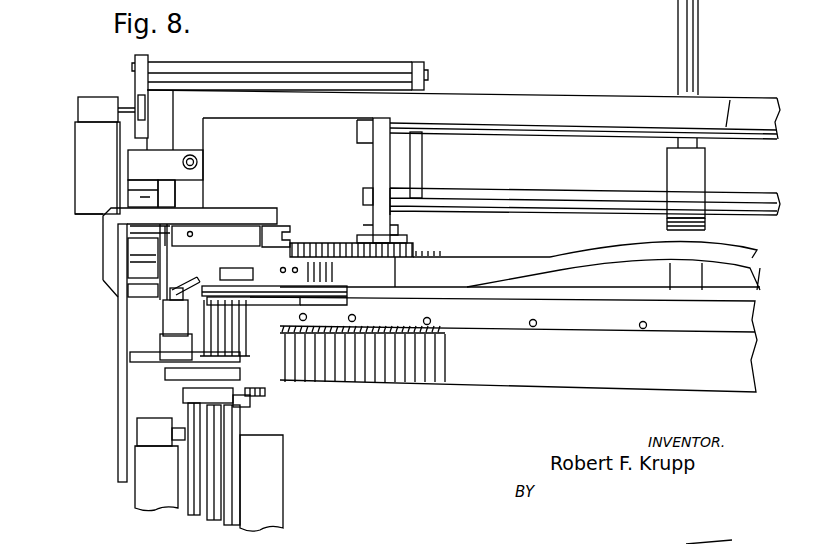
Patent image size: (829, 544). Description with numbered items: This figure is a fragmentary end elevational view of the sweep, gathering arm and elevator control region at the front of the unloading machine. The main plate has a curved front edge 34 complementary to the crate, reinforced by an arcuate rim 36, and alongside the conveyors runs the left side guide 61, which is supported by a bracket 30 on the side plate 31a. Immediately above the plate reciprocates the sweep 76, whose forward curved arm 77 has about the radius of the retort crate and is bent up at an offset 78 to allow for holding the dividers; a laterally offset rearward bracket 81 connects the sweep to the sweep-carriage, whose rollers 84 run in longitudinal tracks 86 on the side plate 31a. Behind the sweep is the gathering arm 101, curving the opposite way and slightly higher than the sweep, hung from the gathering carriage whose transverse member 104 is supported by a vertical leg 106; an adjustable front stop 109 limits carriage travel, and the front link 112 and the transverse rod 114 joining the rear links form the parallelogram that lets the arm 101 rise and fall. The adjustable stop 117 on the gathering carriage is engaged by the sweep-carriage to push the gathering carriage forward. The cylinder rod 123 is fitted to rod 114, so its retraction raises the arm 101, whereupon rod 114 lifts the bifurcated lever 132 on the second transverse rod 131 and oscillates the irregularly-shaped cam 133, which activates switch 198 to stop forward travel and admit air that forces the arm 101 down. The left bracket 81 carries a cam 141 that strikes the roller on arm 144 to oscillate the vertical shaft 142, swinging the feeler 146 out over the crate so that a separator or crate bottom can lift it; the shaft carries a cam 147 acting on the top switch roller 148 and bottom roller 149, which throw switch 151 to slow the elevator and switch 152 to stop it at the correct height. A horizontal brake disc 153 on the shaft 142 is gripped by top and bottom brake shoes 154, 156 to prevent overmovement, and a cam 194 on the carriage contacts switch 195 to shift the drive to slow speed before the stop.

The bracket 30 is at (240, 210).
The side plate 31a is at (125, 340).
The front edge 34 is at (587, 323).
The arcuate rim 36 is at (528, 258).
The left side guide 61 is at (277, 237).
The sweep yoke 76 is at (456, 287).
The curved arm 77 is at (480, 272).
The offset 78 is at (732, 253).
The bracket 81 is at (197, 277).
The rollers 84 is at (140, 261).
The longitudinal tracks 86 is at (133, 294).
The gathering arm 101 is at (442, 245).
The transverse member 104 is at (312, 110).
The vertical leg 106 is at (200, 190).
The front stop 109 is at (203, 165).
The front link 112 is at (377, 170).
The transverse rod 114 is at (490, 192).
The adjustable stop 117 is at (197, 234).
The rod 123 is at (695, 40).
The second transverse rod 131 is at (308, 72).
The bifurcated lever 132 is at (420, 167).
The cam 133 is at (135, 92).
The cam 141 is at (272, 265).
The vertical shaft 142 is at (238, 425).
The arm 144 is at (250, 302).
The feeler 146 is at (348, 288).
The cam 147 is at (250, 398).
The top switch roller 148 is at (184, 414).
The bottom roller 149 is at (173, 438).
The switch 151 is at (270, 485).
The switch 152 is at (140, 440).
The brake disc 153 is at (265, 390).
The top brake shoe 154 is at (140, 360).
The bottom brake shoe 156 is at (180, 378).
The cam 194 is at (172, 292).
The switch 195 is at (177, 320).
The switch 198 is at (90, 112).